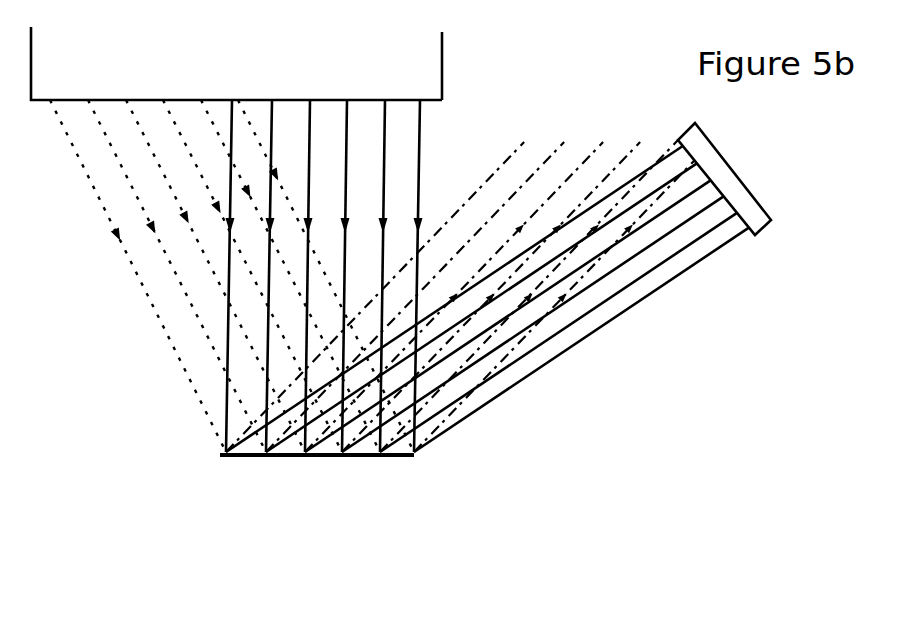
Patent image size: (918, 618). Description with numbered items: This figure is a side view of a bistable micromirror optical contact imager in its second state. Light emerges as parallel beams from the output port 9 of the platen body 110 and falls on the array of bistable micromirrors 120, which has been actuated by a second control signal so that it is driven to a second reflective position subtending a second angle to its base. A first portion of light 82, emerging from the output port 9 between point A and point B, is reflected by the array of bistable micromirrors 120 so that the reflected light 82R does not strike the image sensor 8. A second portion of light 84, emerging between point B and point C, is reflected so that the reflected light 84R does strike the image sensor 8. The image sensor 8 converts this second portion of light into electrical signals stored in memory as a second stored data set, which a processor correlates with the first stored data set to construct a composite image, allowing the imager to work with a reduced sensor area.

The image sensor 8 is at (771, 222).
The output port 9 is at (439, 100).
The first portion of light 82 is at (147, 148).
The reflected light 82R is at (562, 150).
The second portion of light 84 is at (384, 180).
The reflected light 84R is at (622, 263).
The platen body 110 is at (442, 53).
The array of bistable micromirrors 120 is at (238, 456).